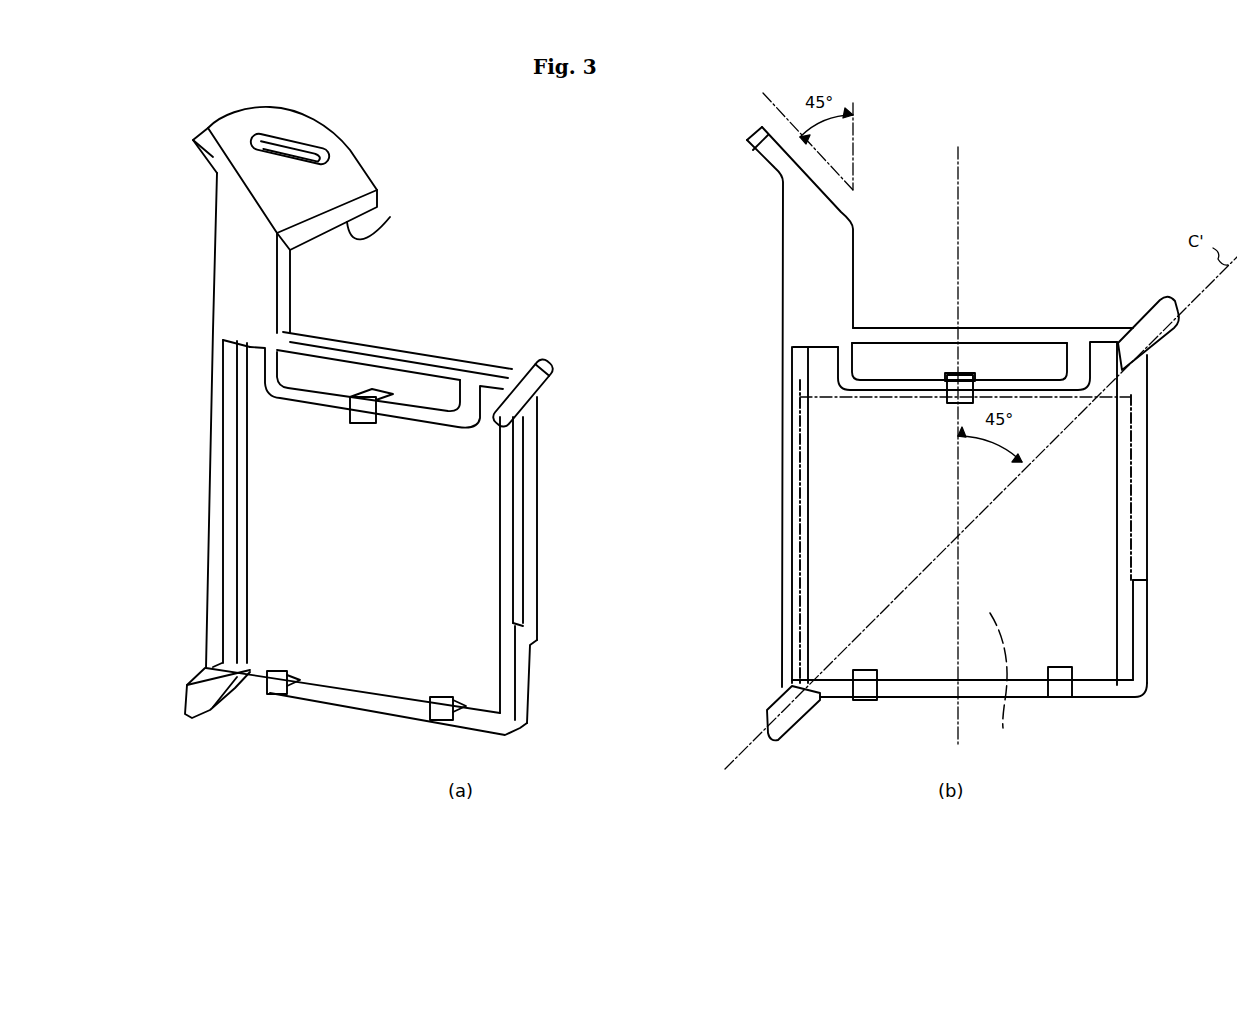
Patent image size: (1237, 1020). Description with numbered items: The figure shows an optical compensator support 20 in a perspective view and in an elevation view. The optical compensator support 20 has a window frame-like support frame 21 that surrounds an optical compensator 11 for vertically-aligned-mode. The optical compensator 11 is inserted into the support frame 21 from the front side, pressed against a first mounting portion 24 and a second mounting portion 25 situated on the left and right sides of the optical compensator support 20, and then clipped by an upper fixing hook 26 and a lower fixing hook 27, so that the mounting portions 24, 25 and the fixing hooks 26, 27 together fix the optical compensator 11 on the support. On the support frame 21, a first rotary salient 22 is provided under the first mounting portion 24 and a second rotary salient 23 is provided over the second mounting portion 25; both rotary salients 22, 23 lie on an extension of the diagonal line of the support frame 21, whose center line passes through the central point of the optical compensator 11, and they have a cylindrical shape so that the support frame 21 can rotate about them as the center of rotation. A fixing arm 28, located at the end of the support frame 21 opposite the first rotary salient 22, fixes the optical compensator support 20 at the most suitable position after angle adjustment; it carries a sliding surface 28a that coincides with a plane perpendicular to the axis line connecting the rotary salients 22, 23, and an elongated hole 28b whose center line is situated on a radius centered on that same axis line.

The optical compensator for vertically-aligned-mode 11 is at (1005, 679).
The optical compensator support 20 is at (513, 274).
The support frame 21 is at (520, 653).
The first rotary salient 22 is at (205, 703).
The second rotary salient 23 is at (534, 384).
The first mounting portion 24 is at (227, 587).
The second mounting portion 25 is at (505, 502).
The upper fixing hook 26 is at (372, 390).
The lower fixing hook 27 is at (424, 720).
The fixing arm 28 is at (433, 133).
The sliding surface 28a is at (390, 217).
The elongated hole 28b is at (337, 140).